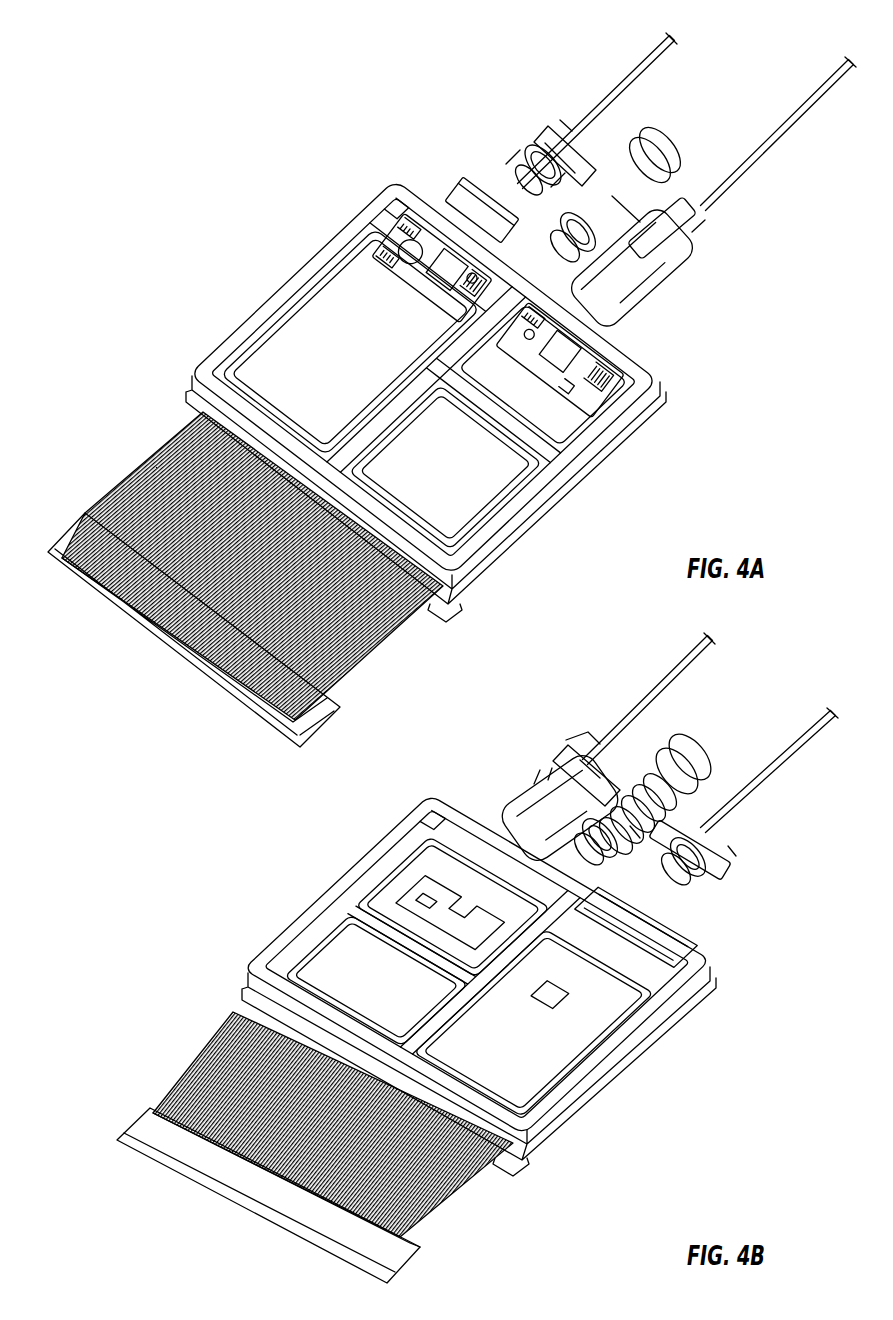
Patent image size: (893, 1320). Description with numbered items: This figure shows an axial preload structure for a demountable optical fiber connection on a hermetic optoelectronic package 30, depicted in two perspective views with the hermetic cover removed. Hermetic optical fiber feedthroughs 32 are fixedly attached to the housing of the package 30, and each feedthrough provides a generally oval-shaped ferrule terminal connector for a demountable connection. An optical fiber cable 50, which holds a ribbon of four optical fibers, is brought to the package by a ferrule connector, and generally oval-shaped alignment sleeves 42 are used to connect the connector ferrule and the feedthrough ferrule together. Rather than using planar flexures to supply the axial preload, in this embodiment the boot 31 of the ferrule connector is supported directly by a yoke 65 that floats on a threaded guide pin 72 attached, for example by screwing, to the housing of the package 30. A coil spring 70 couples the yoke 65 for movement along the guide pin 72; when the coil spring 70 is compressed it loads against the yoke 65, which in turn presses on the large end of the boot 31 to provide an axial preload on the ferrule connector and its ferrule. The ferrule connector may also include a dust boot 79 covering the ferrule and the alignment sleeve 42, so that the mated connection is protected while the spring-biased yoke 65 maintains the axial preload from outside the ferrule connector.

In FIG. 4A, the hermetic optoelectronic package 30 is at (584, 460).
In FIG. 4B, the hermetic optoelectronic package 30 is at (630, 1060).
In FIG. 4A, the boot 31 is at (537, 160).
In FIG. 4B, the boot 31 is at (700, 868).
In FIG. 4A, the hermetic optical fiber feedthrough 32 is at (442, 242).
In FIG. 4B, the hermetic optical fiber feedthrough 32 is at (672, 905).
In FIG. 4A, the alignment sleeve 42 is at (512, 190).
In FIG. 4A, the optical fiber cable 50 is at (650, 68).
In FIG. 4B, the optical fiber cable 50 is at (677, 675).
In FIG. 4A, the yoke 65 is at (728, 208).
In FIG. 4B, the yoke 65 is at (738, 855).
In FIG. 4A, the coil spring 70 is at (635, 145).
In FIG. 4B, the coil spring 70 is at (680, 805).
In FIG. 4A, the threaded guide pin 72 is at (668, 140).
In FIG. 4B, the threaded guide pin 72 is at (688, 762).
In FIG. 4A, the dust boot 79 is at (678, 270).
In FIG. 4B, the dust boot 79 is at (543, 793).